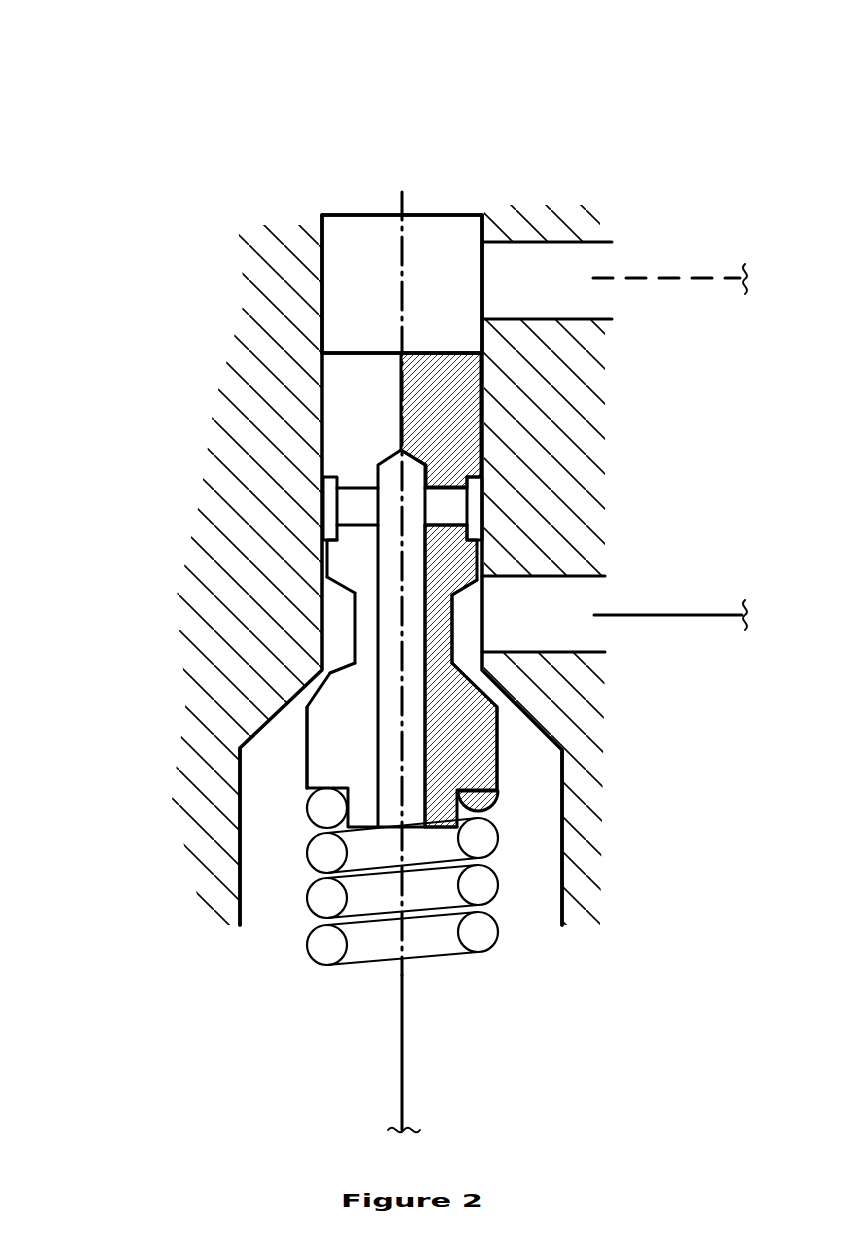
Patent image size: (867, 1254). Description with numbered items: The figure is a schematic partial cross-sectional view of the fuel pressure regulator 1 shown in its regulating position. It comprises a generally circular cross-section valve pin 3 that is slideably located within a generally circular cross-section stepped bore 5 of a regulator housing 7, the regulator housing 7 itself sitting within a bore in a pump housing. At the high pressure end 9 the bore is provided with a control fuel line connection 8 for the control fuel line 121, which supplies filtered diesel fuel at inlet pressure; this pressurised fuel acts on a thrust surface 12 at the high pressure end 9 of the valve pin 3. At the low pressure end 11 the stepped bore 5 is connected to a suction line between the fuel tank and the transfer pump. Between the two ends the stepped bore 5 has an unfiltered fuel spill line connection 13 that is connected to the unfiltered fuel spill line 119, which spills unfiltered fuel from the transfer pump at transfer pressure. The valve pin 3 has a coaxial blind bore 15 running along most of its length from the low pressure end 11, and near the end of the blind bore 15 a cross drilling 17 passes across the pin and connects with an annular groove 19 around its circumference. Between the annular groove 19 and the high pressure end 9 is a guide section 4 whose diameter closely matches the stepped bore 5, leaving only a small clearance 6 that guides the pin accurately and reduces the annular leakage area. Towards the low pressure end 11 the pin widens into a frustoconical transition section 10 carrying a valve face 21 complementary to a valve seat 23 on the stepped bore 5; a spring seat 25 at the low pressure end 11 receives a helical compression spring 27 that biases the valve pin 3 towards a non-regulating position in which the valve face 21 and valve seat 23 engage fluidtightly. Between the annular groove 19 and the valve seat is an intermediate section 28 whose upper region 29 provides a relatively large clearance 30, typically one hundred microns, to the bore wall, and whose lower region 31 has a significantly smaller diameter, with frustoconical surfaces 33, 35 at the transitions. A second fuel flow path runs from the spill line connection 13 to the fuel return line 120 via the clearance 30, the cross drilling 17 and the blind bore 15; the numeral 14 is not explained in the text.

The fuel pressure regulator 1 is at (531, 171).
The valve pin 3 is at (453, 393).
The guide section 4 is at (320, 255).
The stepped bore 5 is at (430, 277).
The small clearance 6 is at (483, 419).
The regulator housing 7 is at (345, 327).
The control fuel line connection 8 is at (533, 273).
The high pressure end 9 is at (362, 165).
The frustoconical transition section 10 is at (309, 731).
The low pressure end 11 is at (268, 892).
The thrust surface 12 is at (397, 348).
The unfiltered fuel spill line connection 13 is at (569, 588).
The spring chamber 14 is at (531, 888).
The blind bore 15 is at (387, 464).
The cross drilling 17 is at (355, 508).
The annular groove 19 is at (322, 537).
The valve face 21 is at (487, 689).
The valve seat 23 is at (327, 681).
The spring seat 25 is at (308, 792).
The helical compression spring 27 is at (307, 852).
The intermediate section 28 is at (317, 625).
The upper region 29 is at (472, 556).
The clearance 30 is at (325, 560).
The lower region 31 is at (453, 623).
The frustoconical surface 33 is at (335, 589).
The frustoconical surface 35 is at (350, 666).
The unfiltered fuel spill line 119 is at (666, 617).
The fuel return line 120 is at (400, 1052).
The control fuel line 121 is at (670, 277).